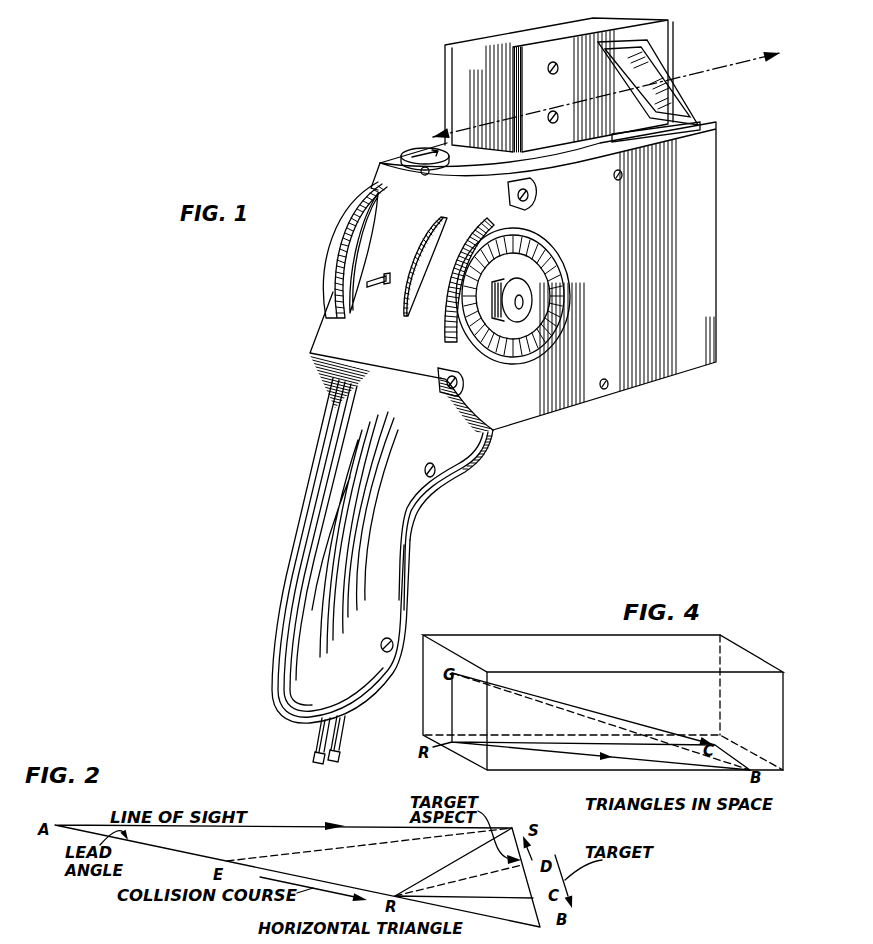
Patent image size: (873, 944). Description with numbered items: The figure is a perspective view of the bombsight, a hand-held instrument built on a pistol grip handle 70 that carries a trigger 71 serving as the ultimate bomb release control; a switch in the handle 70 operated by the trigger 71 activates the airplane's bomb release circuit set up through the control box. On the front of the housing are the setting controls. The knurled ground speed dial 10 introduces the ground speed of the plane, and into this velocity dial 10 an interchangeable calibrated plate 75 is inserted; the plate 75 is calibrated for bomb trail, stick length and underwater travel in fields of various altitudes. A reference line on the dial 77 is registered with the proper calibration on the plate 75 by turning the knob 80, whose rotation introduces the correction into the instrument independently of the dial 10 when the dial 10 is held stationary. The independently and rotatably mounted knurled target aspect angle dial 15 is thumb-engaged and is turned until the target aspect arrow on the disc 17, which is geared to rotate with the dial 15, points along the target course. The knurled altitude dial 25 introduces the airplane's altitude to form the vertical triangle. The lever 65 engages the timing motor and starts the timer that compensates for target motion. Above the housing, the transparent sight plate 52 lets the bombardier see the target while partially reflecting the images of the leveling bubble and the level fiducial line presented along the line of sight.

The ground speed dial 10 is at (440, 324).
The target aspect angle dial 15 is at (418, 257).
The disc 17 is at (406, 152).
The altitude dial 25 is at (324, 239).
The sight plate 52 is at (683, 99).
The lever 65 is at (376, 288).
The pistol grip handle 70 is at (375, 590).
The trigger 71 is at (500, 455).
The plate 75 is at (546, 229).
The dial 77 is at (549, 257).
The knob 80 is at (531, 290).